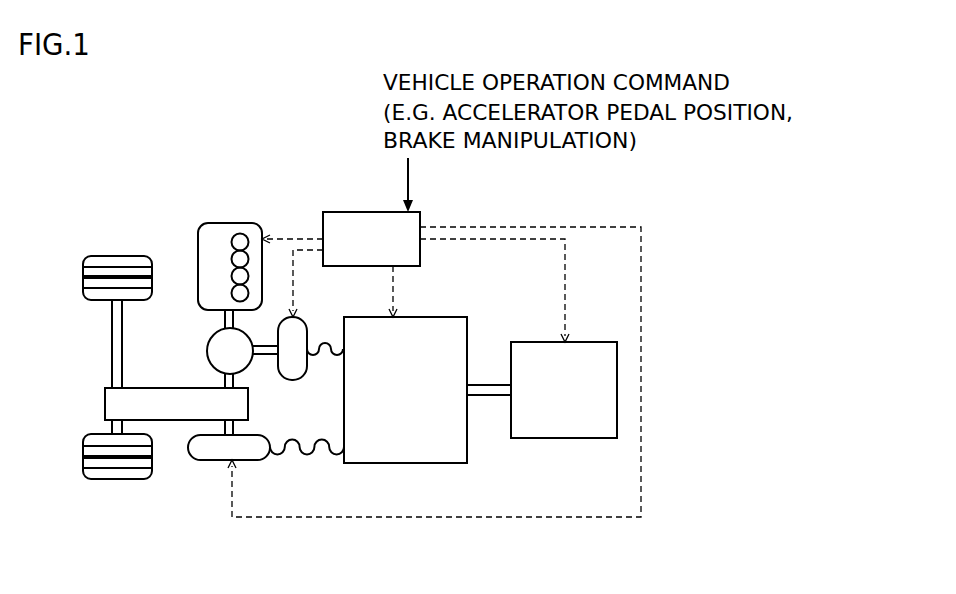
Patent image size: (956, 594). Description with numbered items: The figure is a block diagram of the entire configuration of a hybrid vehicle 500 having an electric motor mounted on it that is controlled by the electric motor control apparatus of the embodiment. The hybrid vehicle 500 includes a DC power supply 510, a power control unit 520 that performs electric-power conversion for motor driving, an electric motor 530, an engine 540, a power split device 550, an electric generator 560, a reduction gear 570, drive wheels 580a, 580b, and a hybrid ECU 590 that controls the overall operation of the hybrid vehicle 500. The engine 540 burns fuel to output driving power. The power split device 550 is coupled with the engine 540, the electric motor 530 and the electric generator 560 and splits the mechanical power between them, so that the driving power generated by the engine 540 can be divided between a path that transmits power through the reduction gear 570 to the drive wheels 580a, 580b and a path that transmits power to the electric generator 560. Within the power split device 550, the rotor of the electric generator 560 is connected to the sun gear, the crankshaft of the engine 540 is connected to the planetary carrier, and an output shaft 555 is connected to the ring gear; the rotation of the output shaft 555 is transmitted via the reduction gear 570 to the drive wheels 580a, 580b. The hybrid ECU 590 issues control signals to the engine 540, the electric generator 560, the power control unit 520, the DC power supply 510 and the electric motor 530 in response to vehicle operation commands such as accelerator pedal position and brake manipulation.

The hybrid vehicle 500 is at (105, 148).
The DC power supply 510 is at (565, 439).
The power control unit (PCU) 520 is at (392, 464).
The electric motor 530 is at (206, 462).
The engine 540 is at (232, 222).
The power split device 550 is at (208, 336).
The output shaft 555 is at (225, 380).
The electric generator 560 is at (292, 381).
The reduction gear 570 is at (144, 388).
The drive wheel 580a is at (117, 256).
The drive wheel 580b is at (120, 480).
The hybrid ECU 590 is at (372, 212).